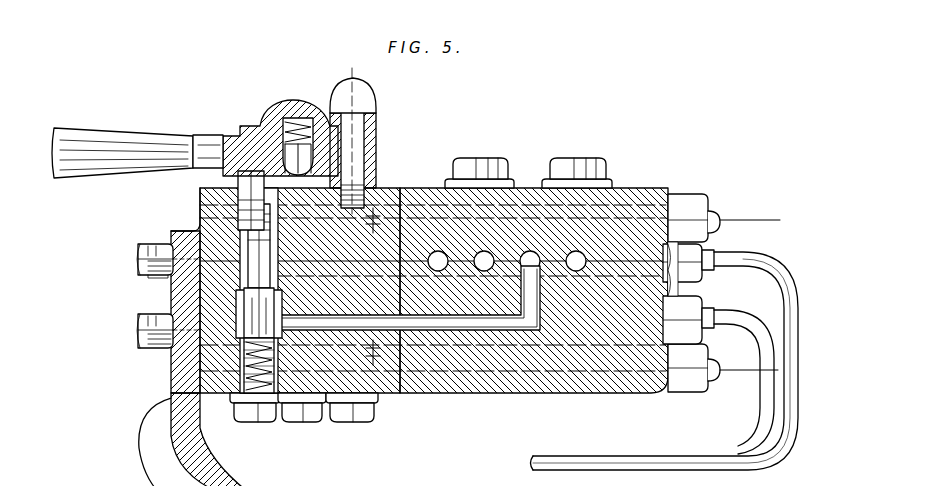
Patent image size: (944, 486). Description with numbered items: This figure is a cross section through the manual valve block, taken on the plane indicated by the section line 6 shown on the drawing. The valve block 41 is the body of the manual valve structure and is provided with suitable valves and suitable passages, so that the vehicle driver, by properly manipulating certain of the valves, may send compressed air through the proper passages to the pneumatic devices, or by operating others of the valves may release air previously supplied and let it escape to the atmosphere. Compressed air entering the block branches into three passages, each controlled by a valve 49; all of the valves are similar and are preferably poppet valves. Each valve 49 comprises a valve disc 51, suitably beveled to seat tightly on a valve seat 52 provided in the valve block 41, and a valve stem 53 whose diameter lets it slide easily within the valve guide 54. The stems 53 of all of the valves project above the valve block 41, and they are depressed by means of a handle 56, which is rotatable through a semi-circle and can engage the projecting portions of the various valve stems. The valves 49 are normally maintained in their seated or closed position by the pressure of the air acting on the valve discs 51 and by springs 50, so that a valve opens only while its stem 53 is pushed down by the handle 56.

The valve block 41 is at (316, 378).
The valve 49 is at (229, 176).
The spring 50 is at (246, 386).
The valve disc 51 is at (215, 292).
The valve seat 52 is at (165, 275).
The valve stem 53 is at (248, 236).
The valve guide 54 is at (165, 327).
The handle 56 is at (151, 126).
The section line 6- 6 is at (384, 102).